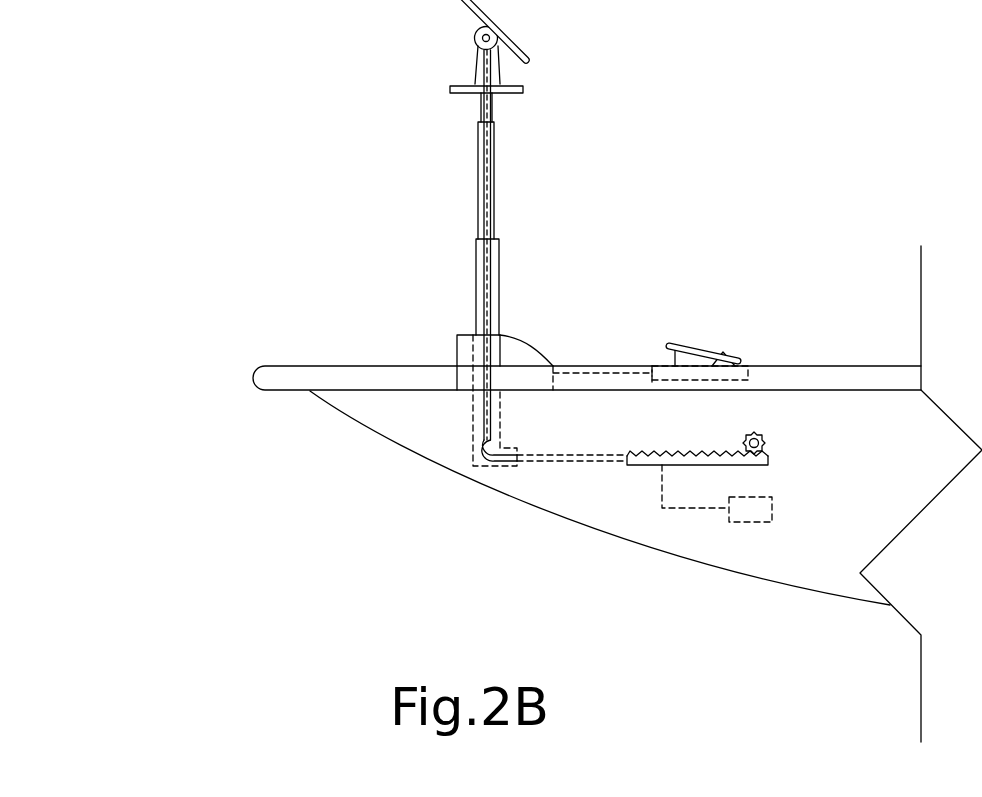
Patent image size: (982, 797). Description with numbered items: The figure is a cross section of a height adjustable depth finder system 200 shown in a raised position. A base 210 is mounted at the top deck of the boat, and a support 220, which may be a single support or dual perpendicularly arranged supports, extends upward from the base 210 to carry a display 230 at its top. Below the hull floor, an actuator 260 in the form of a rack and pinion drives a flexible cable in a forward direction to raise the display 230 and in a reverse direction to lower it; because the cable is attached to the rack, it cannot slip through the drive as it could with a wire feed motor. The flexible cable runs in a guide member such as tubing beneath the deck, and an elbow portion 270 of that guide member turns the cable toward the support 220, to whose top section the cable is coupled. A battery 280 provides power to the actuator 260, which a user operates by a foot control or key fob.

The height adjustable depth finder system 200 is at (333, 141).
The base 210 is at (500, 334).
The support 220 is at (499, 264).
The display 230 is at (538, 40).
The actuator 260 is at (700, 455).
The elbow portion 270 is at (485, 463).
The battery 280 is at (757, 522).